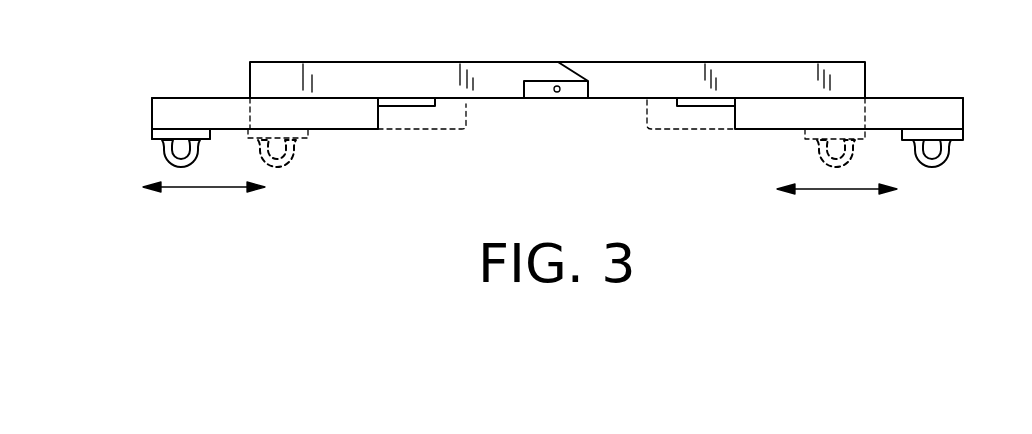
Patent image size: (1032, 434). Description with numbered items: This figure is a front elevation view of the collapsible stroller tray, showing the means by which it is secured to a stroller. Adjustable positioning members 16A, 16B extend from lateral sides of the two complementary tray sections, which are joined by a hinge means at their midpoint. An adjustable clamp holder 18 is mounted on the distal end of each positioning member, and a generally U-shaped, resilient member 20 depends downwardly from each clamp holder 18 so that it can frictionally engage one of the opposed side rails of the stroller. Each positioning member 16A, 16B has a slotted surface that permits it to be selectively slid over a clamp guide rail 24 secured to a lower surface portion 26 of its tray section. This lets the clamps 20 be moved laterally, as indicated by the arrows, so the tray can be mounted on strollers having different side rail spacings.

The adjustable positioning member 16A is at (207, 102).
The adjustable positioning member 16B is at (920, 115).
The adjustable clamp holder 18 is at (148, 150).
The U-shaped resilient member 20 is at (160, 158).
The clamp guide rail 24 is at (395, 105).
The lower surface portion 26 is at (622, 98).